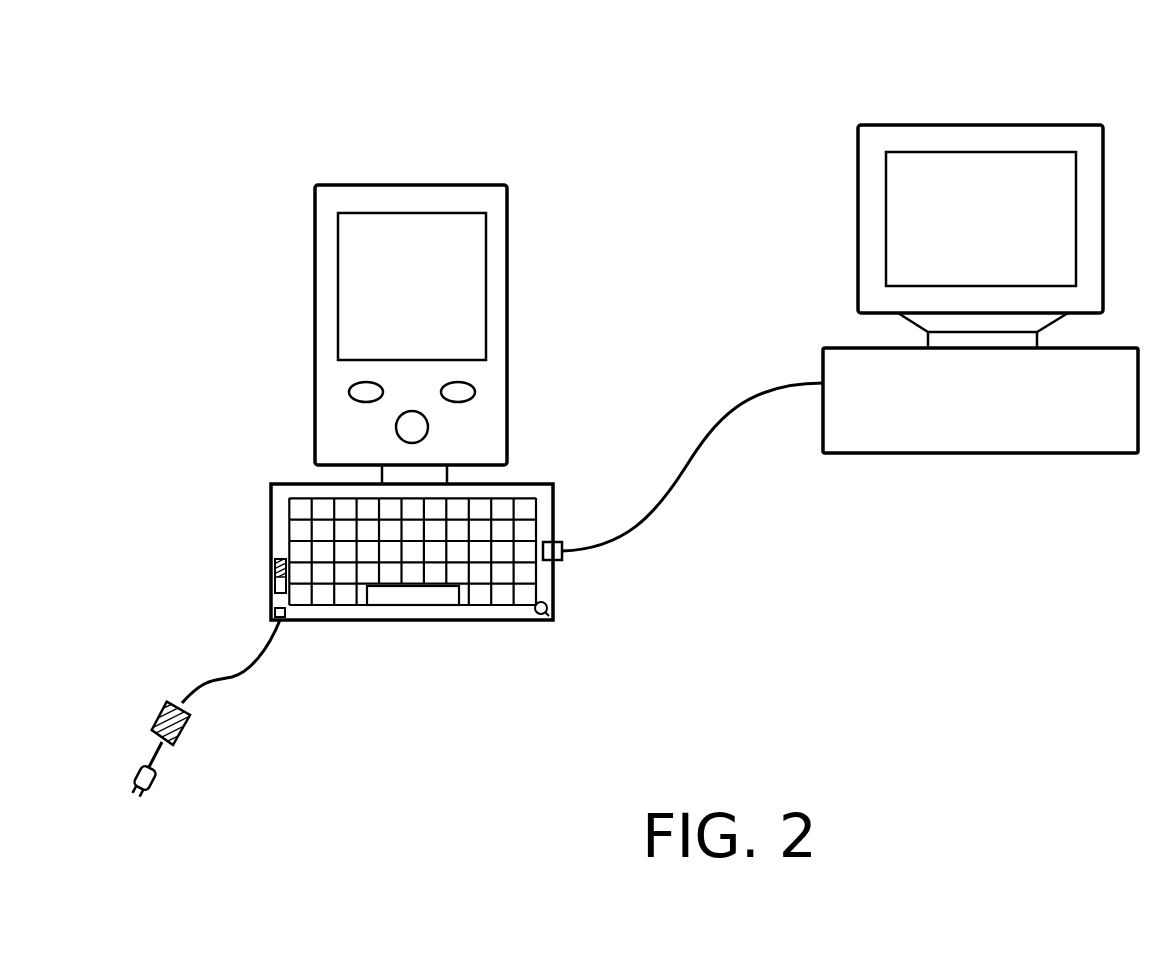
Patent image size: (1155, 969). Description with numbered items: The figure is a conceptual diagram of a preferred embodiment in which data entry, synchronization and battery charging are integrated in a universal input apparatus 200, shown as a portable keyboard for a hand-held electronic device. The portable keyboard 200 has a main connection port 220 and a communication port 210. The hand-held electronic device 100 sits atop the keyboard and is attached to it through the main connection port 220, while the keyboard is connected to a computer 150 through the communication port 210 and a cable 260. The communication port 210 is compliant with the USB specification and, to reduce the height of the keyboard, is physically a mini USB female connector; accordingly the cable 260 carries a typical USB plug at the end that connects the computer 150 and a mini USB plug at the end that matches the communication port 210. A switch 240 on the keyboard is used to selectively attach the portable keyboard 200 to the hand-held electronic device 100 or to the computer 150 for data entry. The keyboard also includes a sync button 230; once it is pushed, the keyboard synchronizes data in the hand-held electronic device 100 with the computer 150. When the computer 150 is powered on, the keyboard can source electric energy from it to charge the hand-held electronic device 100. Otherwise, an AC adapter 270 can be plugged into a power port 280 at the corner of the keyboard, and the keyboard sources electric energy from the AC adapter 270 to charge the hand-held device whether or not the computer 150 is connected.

The hand-held electronic device 100 is at (410, 185).
The computer 150 is at (1035, 453).
The universal input apparatus 200 is at (271, 529).
The communication port 210 is at (557, 543).
The main connection port 220 is at (382, 478).
The sync button 230 is at (550, 620).
The switch 240 is at (275, 576).
The cable 260 is at (688, 465).
The AC adapter 270 is at (192, 733).
The power port 280 is at (288, 620).